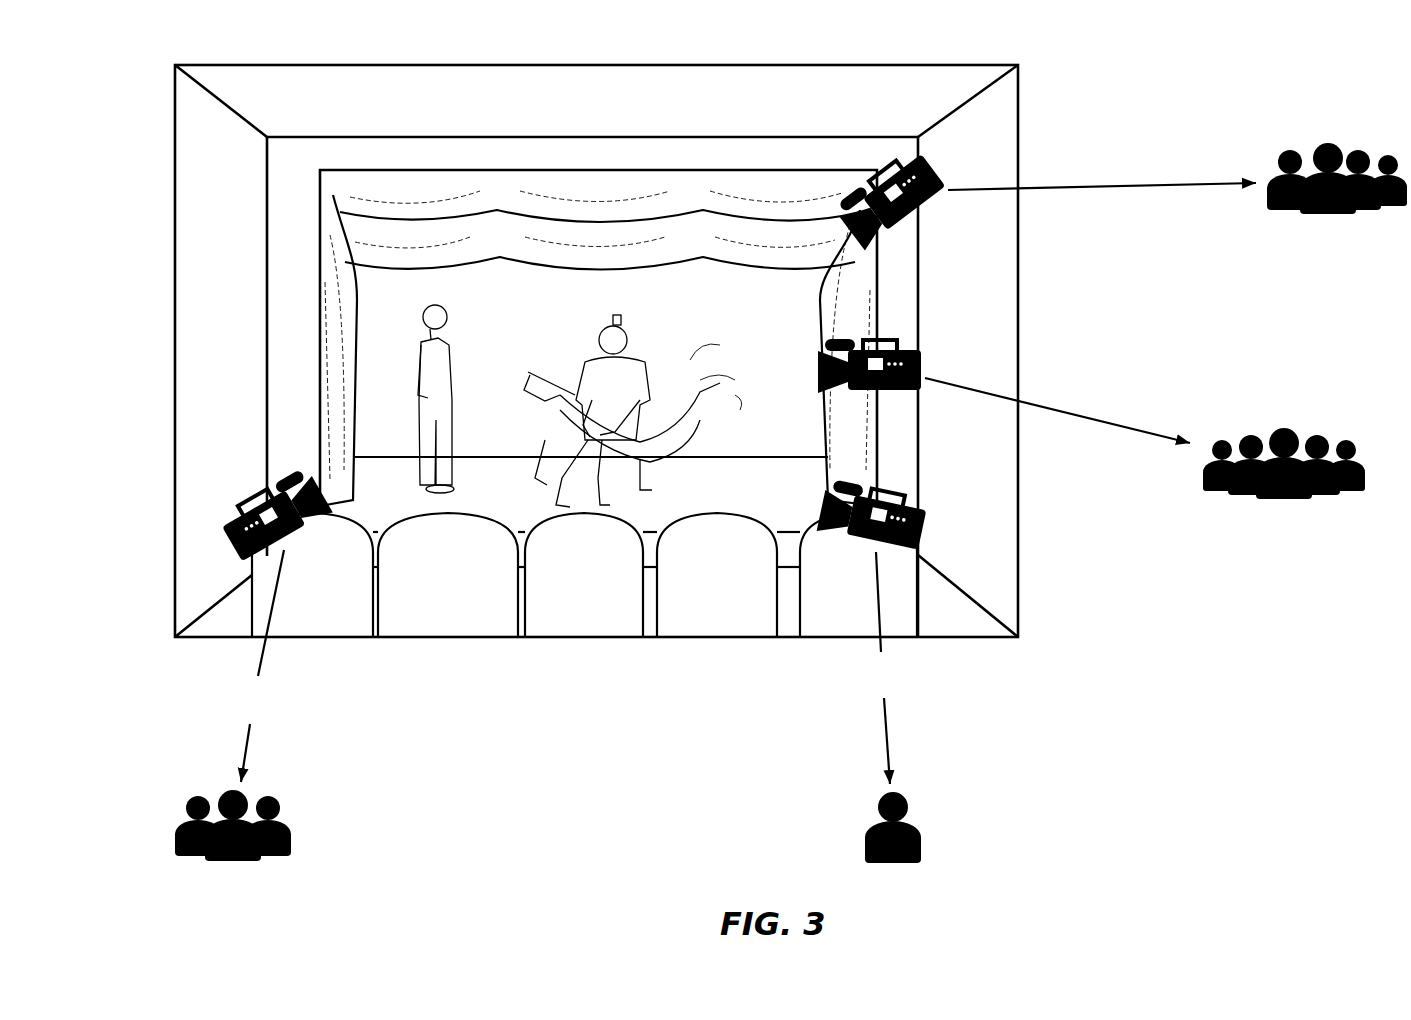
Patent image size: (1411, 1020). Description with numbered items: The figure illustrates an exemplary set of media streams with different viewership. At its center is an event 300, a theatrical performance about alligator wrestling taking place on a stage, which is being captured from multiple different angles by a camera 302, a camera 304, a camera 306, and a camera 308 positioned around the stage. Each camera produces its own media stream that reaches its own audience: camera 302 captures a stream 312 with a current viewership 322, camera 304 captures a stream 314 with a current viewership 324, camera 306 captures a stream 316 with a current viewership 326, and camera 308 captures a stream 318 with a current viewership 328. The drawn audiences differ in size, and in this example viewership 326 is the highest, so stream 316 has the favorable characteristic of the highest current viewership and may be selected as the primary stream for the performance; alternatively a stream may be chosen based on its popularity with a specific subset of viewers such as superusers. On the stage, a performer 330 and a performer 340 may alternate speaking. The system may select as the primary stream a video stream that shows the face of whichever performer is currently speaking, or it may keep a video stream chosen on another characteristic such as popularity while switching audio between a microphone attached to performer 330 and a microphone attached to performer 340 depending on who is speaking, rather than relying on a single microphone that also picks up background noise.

The event 300 is at (184, 109).
The camera 302 is at (210, 558).
The camera 304 is at (954, 180).
The camera 306 is at (944, 362).
The camera 308 is at (940, 540).
The stream 312 is at (254, 666).
The stream 314 is at (1102, 190).
The stream 316 is at (1057, 412).
The stream 318 is at (884, 668).
The viewership 322 is at (233, 861).
The viewership 324 is at (1337, 207).
The viewership 326 is at (1284, 491).
The viewership 328 is at (891, 850).
The performer 330 is at (402, 304).
The performer 340 is at (640, 316).